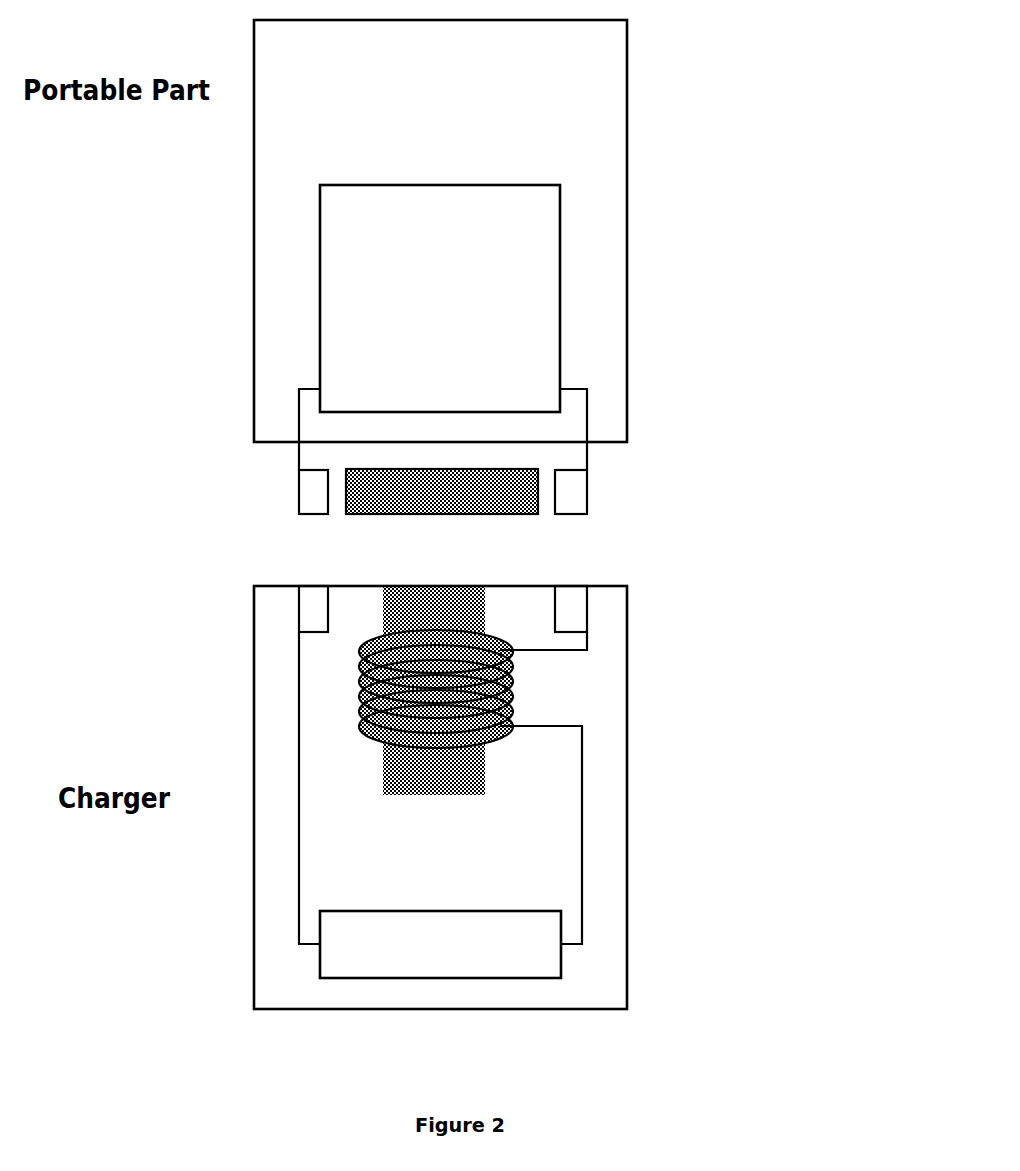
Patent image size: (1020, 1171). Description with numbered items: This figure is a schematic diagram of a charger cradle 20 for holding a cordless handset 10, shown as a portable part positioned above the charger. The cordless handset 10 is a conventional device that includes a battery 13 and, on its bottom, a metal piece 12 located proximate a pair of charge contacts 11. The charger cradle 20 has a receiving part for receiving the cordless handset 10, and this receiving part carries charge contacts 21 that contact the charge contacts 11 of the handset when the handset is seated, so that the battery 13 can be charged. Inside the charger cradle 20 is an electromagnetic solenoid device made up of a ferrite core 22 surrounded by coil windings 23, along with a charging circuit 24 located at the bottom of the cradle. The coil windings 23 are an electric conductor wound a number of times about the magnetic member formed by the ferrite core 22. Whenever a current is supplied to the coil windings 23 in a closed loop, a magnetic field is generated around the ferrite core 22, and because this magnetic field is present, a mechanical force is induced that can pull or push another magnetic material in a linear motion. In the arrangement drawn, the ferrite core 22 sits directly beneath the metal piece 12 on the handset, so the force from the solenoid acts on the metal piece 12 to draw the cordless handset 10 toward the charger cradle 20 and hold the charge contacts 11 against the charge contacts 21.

The cordless handset 10 is at (626, 137).
The charge contacts 11 is at (740, 418).
The metal piece 12 is at (545, 467).
The battery 13 is at (499, 298).
The charger cradle 20 is at (627, 648).
The charge contacts 21 is at (115, 362).
The ferrite core 22 is at (489, 774).
The coil windings 23 is at (517, 681).
The charging circuit 24 is at (562, 965).